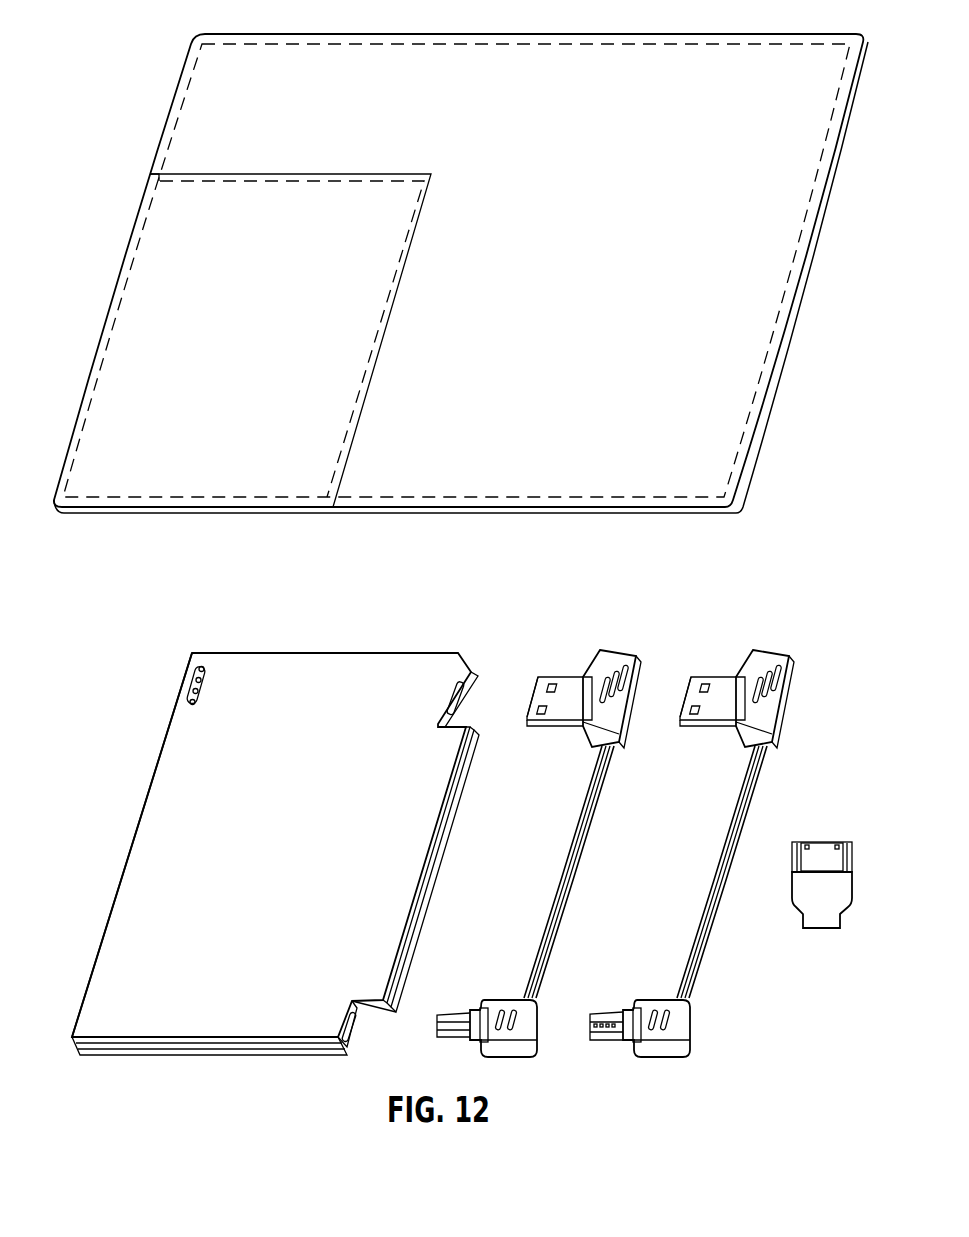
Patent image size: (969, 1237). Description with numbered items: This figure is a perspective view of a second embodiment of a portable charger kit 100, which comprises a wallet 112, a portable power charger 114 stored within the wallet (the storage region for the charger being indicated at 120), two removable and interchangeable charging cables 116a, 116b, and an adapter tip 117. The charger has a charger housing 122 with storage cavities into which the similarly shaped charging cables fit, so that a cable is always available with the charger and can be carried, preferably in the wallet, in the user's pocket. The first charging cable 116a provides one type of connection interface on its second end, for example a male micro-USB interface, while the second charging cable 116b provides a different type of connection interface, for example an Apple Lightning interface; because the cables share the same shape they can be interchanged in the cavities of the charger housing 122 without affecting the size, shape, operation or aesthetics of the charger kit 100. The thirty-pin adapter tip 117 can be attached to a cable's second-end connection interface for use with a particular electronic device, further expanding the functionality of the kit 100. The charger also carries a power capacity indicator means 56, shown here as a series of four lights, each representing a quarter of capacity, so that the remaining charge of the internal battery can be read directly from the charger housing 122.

The kit 100 is at (461, 259).
The sleeve 112 is at (661, 186).
The pocket 120 is at (270, 324).
The battery pack 114 is at (267, 854).
The charger housing 122 is at (143, 896).
The power capacity indicator means 56 is at (213, 719).
The first charging cable 116a is at (504, 1071).
The second charging cable 116b is at (667, 1071).
The adapter tip 117 is at (818, 926).